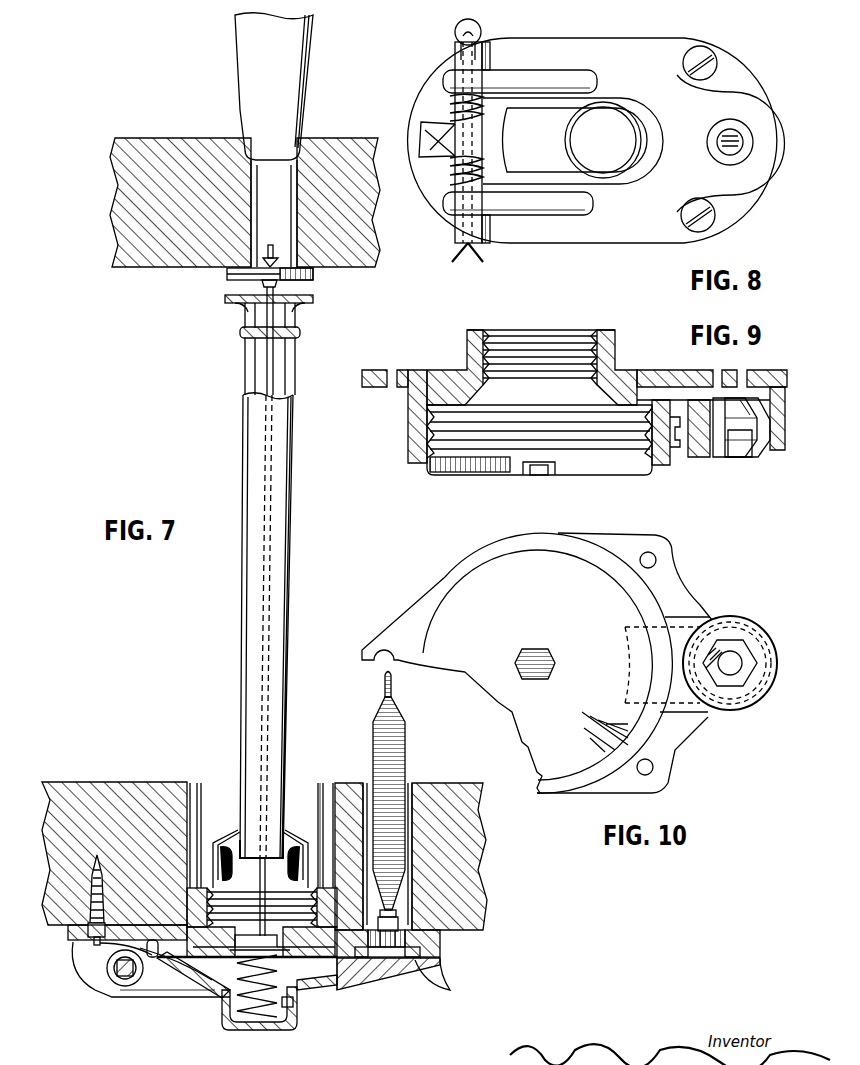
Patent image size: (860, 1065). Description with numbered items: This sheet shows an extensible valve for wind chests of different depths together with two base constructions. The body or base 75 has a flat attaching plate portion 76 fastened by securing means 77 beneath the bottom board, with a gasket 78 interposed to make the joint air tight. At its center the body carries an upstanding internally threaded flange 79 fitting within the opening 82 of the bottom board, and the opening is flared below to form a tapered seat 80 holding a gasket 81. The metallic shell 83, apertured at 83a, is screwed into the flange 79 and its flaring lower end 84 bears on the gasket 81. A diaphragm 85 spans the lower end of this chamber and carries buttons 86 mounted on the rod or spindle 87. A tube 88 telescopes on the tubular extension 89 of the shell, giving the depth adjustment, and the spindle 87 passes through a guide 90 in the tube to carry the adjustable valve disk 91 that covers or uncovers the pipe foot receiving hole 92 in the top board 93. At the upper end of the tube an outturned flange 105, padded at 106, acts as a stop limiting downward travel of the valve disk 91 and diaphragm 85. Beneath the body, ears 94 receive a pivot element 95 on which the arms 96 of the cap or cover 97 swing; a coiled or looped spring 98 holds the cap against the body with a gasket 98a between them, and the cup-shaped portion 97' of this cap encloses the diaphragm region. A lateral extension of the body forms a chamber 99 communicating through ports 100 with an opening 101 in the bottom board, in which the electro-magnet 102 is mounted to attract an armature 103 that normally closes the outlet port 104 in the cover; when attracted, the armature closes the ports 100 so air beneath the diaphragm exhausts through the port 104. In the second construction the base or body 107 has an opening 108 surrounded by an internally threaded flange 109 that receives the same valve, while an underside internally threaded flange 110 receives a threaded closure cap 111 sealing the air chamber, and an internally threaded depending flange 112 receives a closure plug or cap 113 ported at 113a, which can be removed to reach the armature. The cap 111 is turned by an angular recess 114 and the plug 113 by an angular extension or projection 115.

In FIG. 7, the body or base 75 is at (440, 945).
In FIG. 8, the body or base 75 is at (788, 190).
In FIG. 7, the flat attaching plate portion 76 is at (68, 935).
In FIG. 7, the securing means 77 is at (92, 908).
In FIG. 8, the securing means 77 is at (715, 220).
In FIG. 7, the gasket 78 is at (85, 920).
In FIG. 7, the upstanding internally threaded flange 79 is at (324, 893).
In FIG. 7, the tapered seat 80 is at (340, 985).
In FIG. 7, the gasket 81 is at (276, 986).
In FIG. 7, the opening in bottom board 82 is at (262, 870).
In FIG. 7, the metallic shell 83 is at (293, 852).
In FIG. 7, the apertures 83a is at (225, 852).
In FIG. 7, the flaring lower end 84 is at (272, 940).
In FIG. 7, the diaphragm 85 is at (247, 964).
In FIG. 7, the buttons 86 is at (232, 963).
In FIG. 7, the rod or spindle 87 is at (266, 873).
In FIG. 7, the tube 88 is at (285, 593).
In FIG. 7, the tubular extension 89 is at (284, 776).
In FIG. 7, the guide 90 is at (300, 332).
In FIG. 7, the valve disk 91 is at (315, 278).
In FIG. 7, the pipe foot receiving hole 92 is at (274, 140).
In FIG. 7, the top board 93 is at (165, 268).
In FIG. 8, the ears 94 is at (490, 53).
In FIG. 7, the pivot element 95 is at (112, 970).
In FIG. 8, the pivot element 95 is at (455, 32).
In FIG. 7, the arms 96 is at (148, 1000).
In FIG. 8, the arms 96 is at (520, 81).
In FIG. 8, the cap or cover 97 is at (553, 162).
In FIG. 7, the cup 97' is at (279, 1020).
In FIG. 7, the coiled or looped spring 98 is at (174, 997).
In FIG. 8, the coiled or looped spring 98 is at (452, 105).
In FIG. 7, the gasket 98a is at (420, 953).
In FIG. 7, the chamber 99 is at (388, 958).
In FIG. 7, the ports 100 is at (412, 915).
In FIG. 7, the opening through bottom board 101 is at (412, 790).
In FIG. 7, the electro-magnet 102 is at (395, 750).
In FIG. 7, the armature 103 is at (372, 962).
In FIG. 7, the outlet port 104 is at (410, 968).
In FIG. 7, the outturned flange 105 is at (296, 312).
In FIG. 7, the padding 106 is at (313, 298).
In FIG. 9, the base or body 107 is at (408, 390).
In FIG. 10, the base or body 107 is at (672, 578).
In FIG. 9, the opening 108 is at (540, 335).
In FIG. 9, the internally threaded flange 109 is at (603, 330).
In FIG. 9, the internally threaded flange 110 is at (408, 443).
In FIG. 9, the closure cap 111 is at (465, 476).
In FIG. 10, the closure cap 111 is at (507, 671).
In FIG. 9, the internally threaded depending flange 112 is at (786, 445).
In FIG. 10, the internally threaded depending flange 112 is at (760, 690).
In FIG. 9, the closure plug or cap 113 is at (758, 458).
In FIG. 10, the closure plug or cap 113 is at (757, 655).
In FIG. 9, the ports 113a is at (745, 400).
In FIG. 9, the angular recess 114 is at (540, 476).
In FIG. 10, the angular recess 114 is at (555, 660).
In FIG. 9, the angular extension or projection 115 is at (733, 457).
In FIG. 10, the angular extension or projection 115 is at (733, 645).